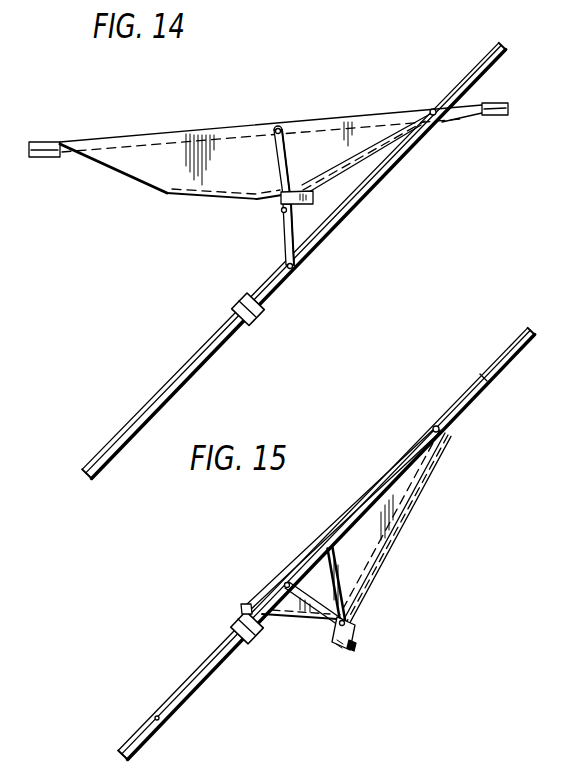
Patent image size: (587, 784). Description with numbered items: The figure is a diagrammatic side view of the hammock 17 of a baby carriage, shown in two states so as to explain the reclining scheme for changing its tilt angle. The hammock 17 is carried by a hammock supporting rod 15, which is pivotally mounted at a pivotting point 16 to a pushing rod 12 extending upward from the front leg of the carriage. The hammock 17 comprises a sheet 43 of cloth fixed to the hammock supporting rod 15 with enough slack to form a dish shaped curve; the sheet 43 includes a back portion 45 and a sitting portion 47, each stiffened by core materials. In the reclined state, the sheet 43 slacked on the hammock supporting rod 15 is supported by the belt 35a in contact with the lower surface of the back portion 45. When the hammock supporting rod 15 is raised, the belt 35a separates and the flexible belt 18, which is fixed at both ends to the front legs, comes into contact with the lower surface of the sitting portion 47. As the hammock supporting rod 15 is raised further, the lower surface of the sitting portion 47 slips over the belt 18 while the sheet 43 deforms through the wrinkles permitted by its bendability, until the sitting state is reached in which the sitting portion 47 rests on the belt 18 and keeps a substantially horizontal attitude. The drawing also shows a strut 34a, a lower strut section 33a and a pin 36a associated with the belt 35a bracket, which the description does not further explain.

In FIG. 14, the pushing rod 12 is at (346, 217).
In FIG. 15, the pushing rod 12 is at (513, 343).
In FIG. 14, the hammock supporting rod 15 is at (48, 143).
In FIG. 15, the hammock supporting rod 15 is at (152, 718).
In FIG. 14, the pivotting point 16 is at (433, 110).
In FIG. 15, the pivotting point 16 is at (434, 428).
In FIG. 14, the hammock 17 is at (147, 187).
In FIG. 15, the hammock 17 is at (385, 557).
In FIG. 14, the belt 18 is at (262, 318).
In FIG. 15, the belt 18 is at (247, 643).
In FIG. 14, the lower strut section 33a is at (283, 233).
In FIG. 15, the lower strut section 33a is at (310, 565).
In FIG. 14, the strut 34a is at (281, 126).
In FIG. 15, the strut 34a is at (343, 578).
In FIG. 14, the belt 35a is at (304, 187).
In FIG. 15, the belt 35a is at (352, 645).
In FIG. 14, the pivot pin 36a is at (305, 205).
In FIG. 15, the pivot pin 36a is at (337, 653).
In FIG. 14, the sheet 43 is at (232, 152).
In FIG. 15, the sheet 43 is at (357, 537).
In FIG. 14, the back portion 45 is at (368, 163).
In FIG. 15, the back portion 45 is at (400, 508).
In FIG. 14, the sitting portion 47 is at (205, 198).
In FIG. 15, the sitting portion 47 is at (290, 620).